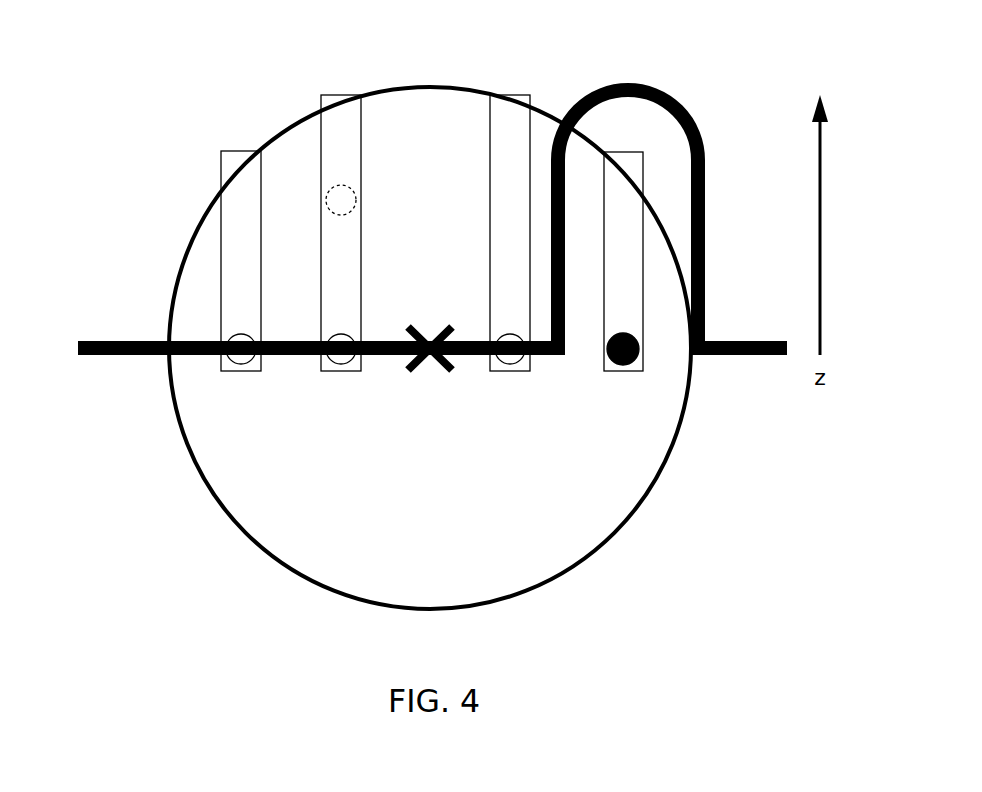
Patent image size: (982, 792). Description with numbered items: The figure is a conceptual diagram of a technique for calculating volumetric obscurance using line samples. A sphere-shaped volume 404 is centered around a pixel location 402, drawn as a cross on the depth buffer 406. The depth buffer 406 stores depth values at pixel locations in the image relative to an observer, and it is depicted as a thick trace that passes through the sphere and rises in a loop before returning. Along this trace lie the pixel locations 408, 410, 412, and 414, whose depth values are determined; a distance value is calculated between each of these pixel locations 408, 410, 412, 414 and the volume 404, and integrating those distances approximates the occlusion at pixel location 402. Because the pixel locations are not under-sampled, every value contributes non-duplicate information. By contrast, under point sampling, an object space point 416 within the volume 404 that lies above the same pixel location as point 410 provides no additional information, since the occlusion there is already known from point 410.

The pixel location 402 is at (432, 354).
The sphere-shaped volume 404 is at (435, 86).
The depth buffer 406 is at (103, 357).
The pixel location 408 is at (252, 368).
The pixel location 410 is at (352, 372).
The pixel location 412 is at (522, 370).
The pixel location 414 is at (628, 367).
The object space point 416 is at (355, 208).